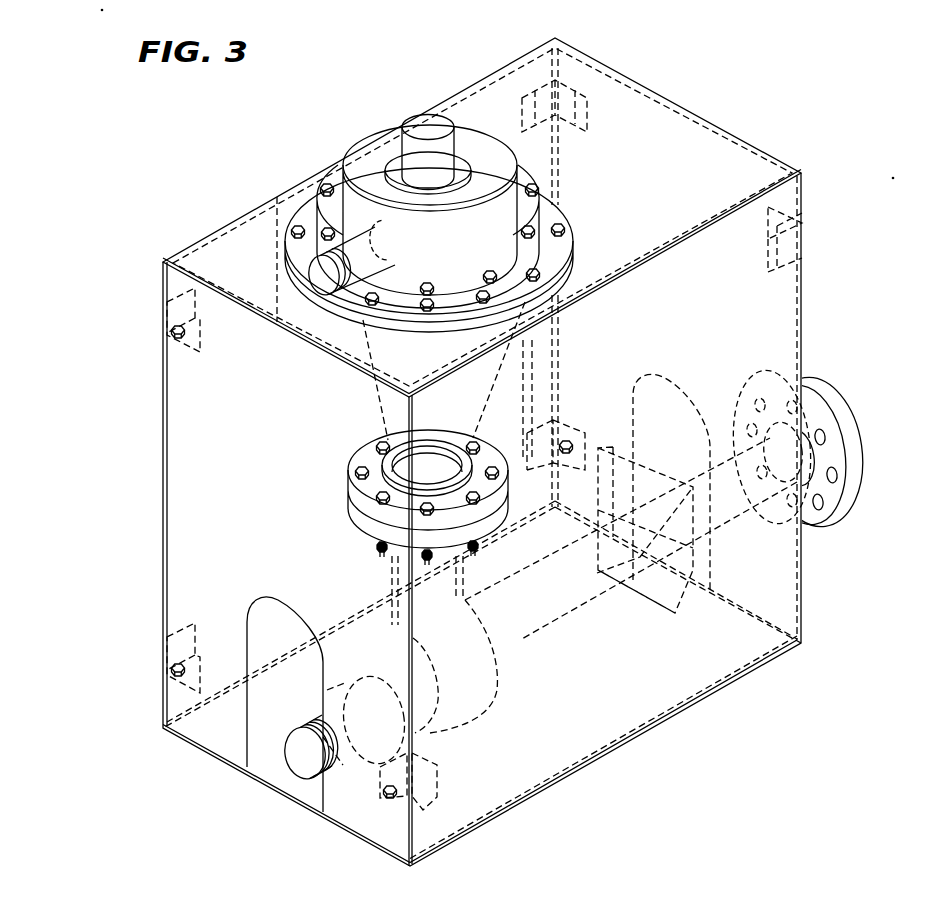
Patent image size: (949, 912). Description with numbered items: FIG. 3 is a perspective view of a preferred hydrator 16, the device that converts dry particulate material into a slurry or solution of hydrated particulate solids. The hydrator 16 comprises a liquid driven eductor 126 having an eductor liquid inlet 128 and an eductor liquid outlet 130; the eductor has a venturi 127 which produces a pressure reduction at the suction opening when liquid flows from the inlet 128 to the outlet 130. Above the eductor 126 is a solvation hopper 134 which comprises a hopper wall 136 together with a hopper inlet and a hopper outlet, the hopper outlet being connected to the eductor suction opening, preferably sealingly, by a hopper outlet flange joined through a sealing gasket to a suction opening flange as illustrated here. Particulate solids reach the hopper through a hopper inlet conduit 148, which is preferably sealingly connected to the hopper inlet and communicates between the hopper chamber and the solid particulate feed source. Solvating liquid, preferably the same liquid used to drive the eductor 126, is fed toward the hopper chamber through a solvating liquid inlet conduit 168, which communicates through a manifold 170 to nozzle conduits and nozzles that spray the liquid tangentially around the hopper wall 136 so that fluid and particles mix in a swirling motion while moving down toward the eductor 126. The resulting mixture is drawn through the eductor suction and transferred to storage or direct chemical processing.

The hydrator 16 is at (160, 182).
The liquid driven eductor 126 is at (528, 657).
The venturi 127 is at (560, 608).
The eductor liquid inlet 128 is at (305, 756).
The eductor liquid outlet 130 is at (843, 438).
The solvation hopper 134 is at (322, 396).
The hopper wall 136 is at (383, 403).
The hopper inlet conduit 148 is at (407, 121).
The solvating liquid inlet conduit 168 is at (400, 256).
The manifold 170 is at (362, 166).